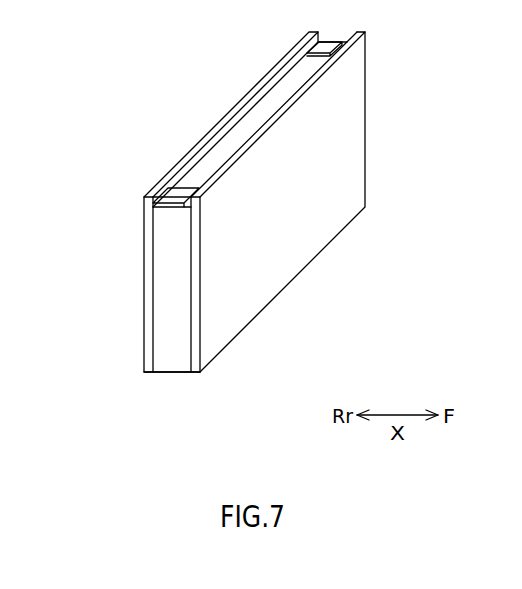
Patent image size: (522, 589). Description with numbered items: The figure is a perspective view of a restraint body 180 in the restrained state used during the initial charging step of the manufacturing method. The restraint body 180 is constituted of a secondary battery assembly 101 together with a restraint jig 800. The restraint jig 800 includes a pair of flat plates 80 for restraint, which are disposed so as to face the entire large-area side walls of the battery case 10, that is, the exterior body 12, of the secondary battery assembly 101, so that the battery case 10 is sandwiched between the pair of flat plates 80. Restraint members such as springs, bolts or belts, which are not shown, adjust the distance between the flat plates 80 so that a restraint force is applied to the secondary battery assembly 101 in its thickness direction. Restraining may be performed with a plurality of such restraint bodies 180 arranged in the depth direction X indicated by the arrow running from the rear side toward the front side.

The restraint body 180 is at (64, 40).
The exterior body 12 is at (203, 202).
The battery case 10 is at (160, 275).
The secondary battery assembly 101 is at (286, 88).
The flat plate for restraint 80 is at (172, 414).
The restraint jig 800 is at (198, 374).